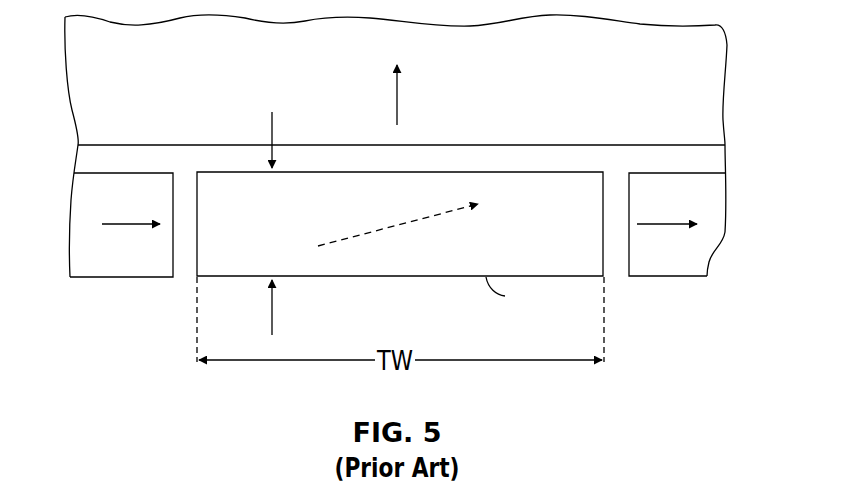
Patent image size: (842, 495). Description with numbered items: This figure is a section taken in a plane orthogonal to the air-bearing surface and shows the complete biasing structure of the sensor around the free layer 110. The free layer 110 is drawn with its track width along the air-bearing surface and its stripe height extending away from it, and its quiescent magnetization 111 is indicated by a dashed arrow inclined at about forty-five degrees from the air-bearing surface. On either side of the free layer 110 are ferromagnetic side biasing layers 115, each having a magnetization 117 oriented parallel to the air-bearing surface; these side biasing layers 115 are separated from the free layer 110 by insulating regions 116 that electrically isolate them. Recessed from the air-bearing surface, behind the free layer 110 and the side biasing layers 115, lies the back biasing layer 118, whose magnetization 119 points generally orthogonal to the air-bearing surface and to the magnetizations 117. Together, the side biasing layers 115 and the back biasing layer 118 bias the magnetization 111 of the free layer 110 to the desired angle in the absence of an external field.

The free layer 110 is at (423, 263).
The quiescent magnetization 111 is at (400, 225).
The side biasing layers 115 is at (108, 268).
The insulating regions 116 is at (705, 155).
The magnetizations of side biasing layers 117 is at (132, 222).
The back biasing layer 118 is at (708, 62).
The magnetization of back biasing layer 119 is at (399, 95).